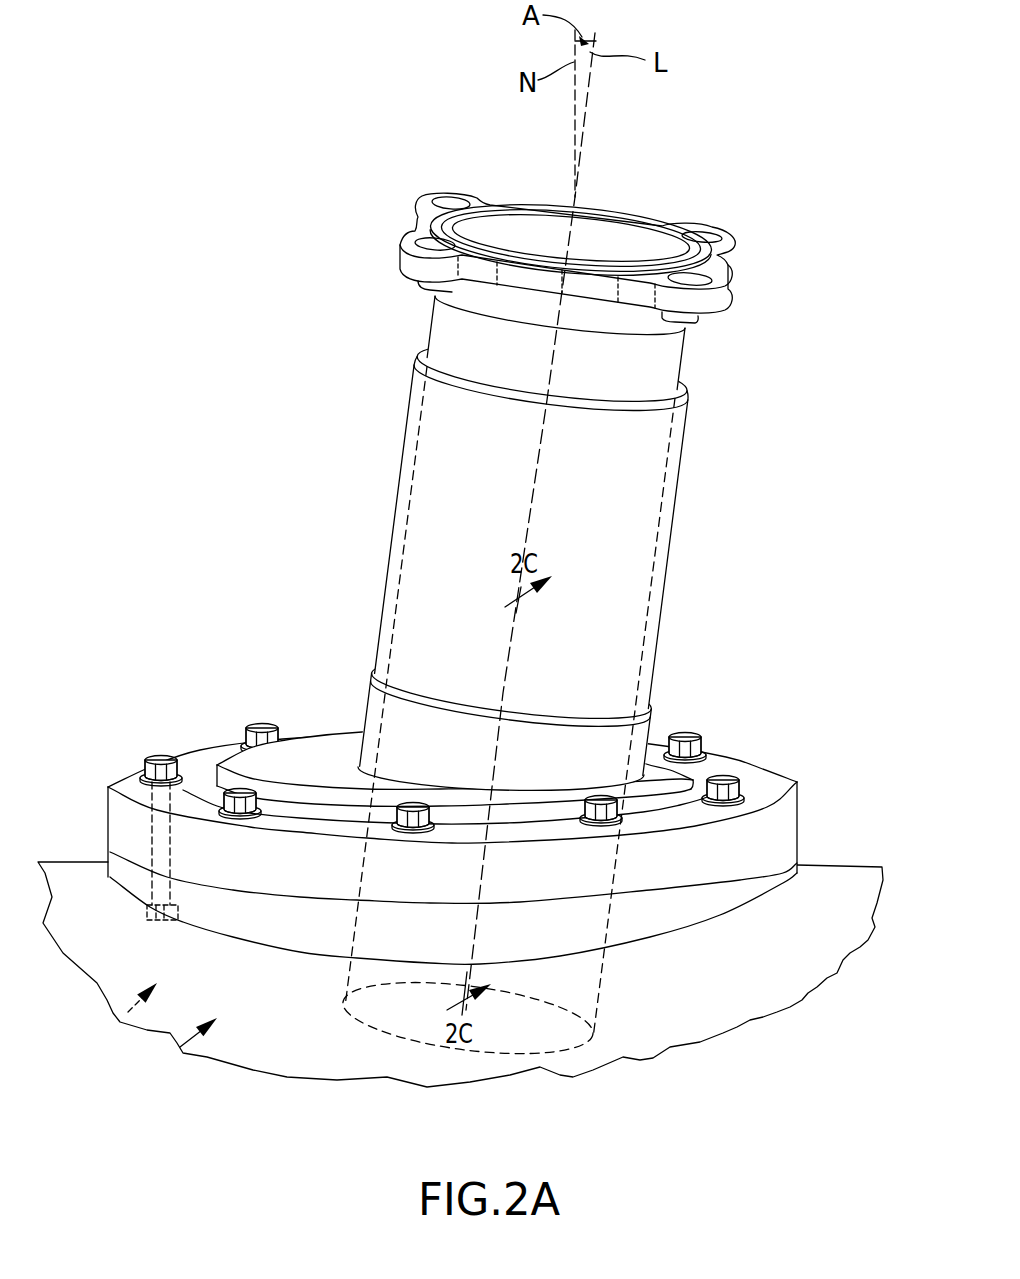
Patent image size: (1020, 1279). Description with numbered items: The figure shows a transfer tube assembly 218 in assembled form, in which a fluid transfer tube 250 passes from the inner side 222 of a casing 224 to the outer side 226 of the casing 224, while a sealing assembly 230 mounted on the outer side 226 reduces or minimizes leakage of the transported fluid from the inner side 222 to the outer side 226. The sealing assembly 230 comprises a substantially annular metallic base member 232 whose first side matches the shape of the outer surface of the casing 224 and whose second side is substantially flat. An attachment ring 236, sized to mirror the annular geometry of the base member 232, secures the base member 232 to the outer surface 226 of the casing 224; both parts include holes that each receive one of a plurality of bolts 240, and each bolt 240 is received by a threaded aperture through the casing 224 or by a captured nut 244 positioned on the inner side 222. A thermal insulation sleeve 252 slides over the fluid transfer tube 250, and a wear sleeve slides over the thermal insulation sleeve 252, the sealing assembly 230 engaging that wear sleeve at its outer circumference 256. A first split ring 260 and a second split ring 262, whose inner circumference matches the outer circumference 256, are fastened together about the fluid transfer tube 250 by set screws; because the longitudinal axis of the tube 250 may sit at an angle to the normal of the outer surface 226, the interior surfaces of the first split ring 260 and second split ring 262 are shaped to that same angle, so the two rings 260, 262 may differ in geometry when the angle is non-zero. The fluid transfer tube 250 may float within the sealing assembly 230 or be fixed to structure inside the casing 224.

The transfer tube assembly 218 is at (466, 600).
The inner side 222 is at (127, 1012).
The casing 224 is at (759, 994).
The outer side 226 is at (180, 1047).
The sealing assembly 230 is at (482, 781).
The base member 232 is at (763, 893).
The attachment ring 236 is at (788, 824).
The bolts 240 is at (480, 757).
The captured nuts 244 is at (156, 922).
The fluid transfer tube 250 is at (685, 358).
The thermal insulation sleeve 252 is at (684, 491).
The outer circumference 256 is at (652, 730).
The first split ring 260 is at (297, 746).
The second split ring 262 is at (680, 768).